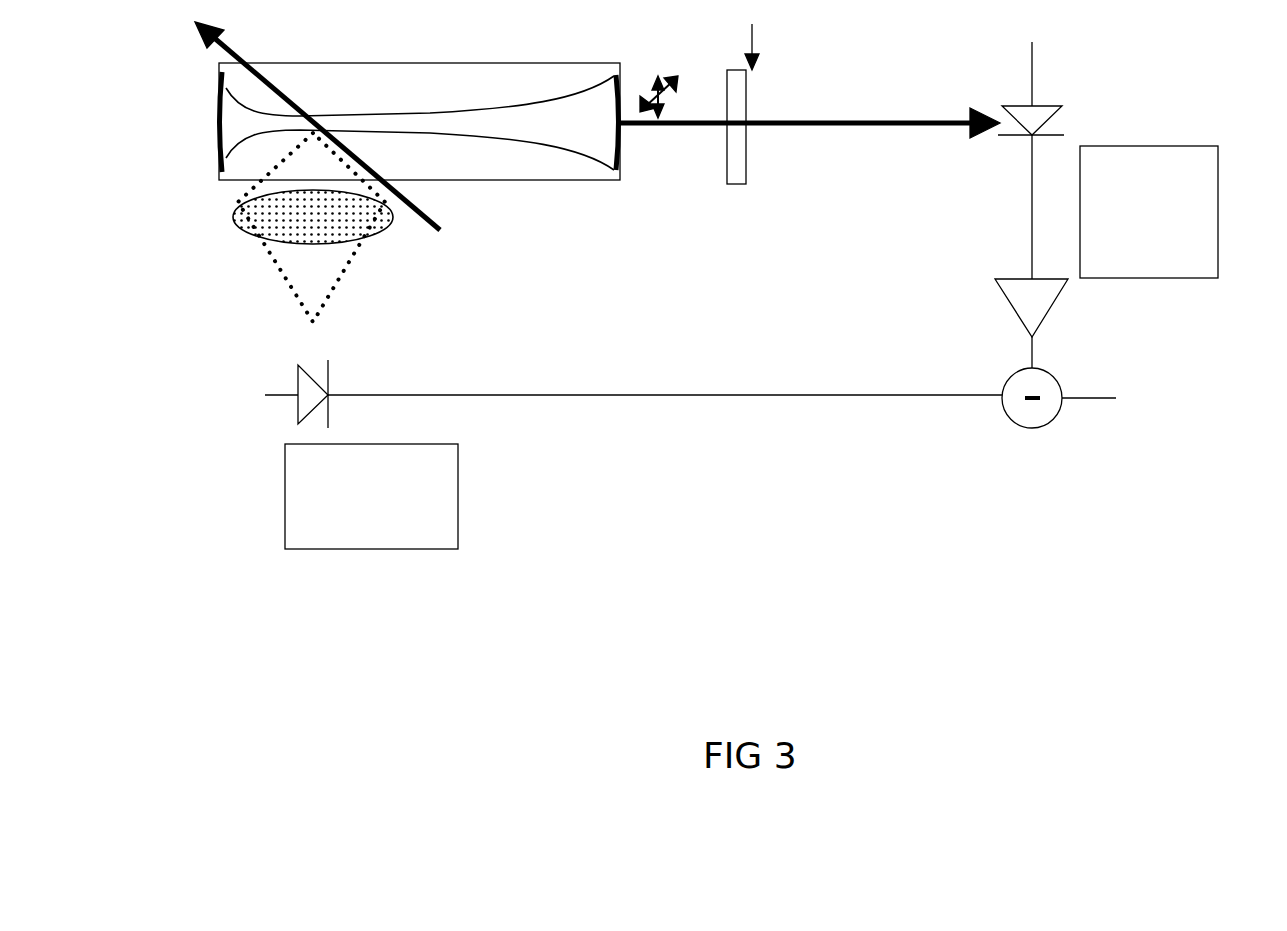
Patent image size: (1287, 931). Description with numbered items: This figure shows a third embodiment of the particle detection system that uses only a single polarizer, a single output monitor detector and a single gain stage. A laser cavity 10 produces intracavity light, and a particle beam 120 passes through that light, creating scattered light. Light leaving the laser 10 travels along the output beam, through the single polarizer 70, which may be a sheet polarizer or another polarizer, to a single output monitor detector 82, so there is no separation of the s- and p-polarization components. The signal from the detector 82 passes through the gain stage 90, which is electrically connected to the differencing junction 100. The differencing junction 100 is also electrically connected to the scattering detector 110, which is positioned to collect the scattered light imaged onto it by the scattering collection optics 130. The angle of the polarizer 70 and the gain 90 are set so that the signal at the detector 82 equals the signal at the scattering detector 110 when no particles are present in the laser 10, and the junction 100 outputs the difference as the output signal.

The laser cavity 10 is at (527, 0).
The polarizer 70 is at (740, 184).
The detector 82 is at (1218, 208).
The gain stage 90 is at (1040, 300).
The differencing junction 100 is at (1000, 406).
The scattering detector 110 is at (458, 486).
The particle beam 120 is at (243, 55).
The scattering collection optics 130 is at (330, 207).